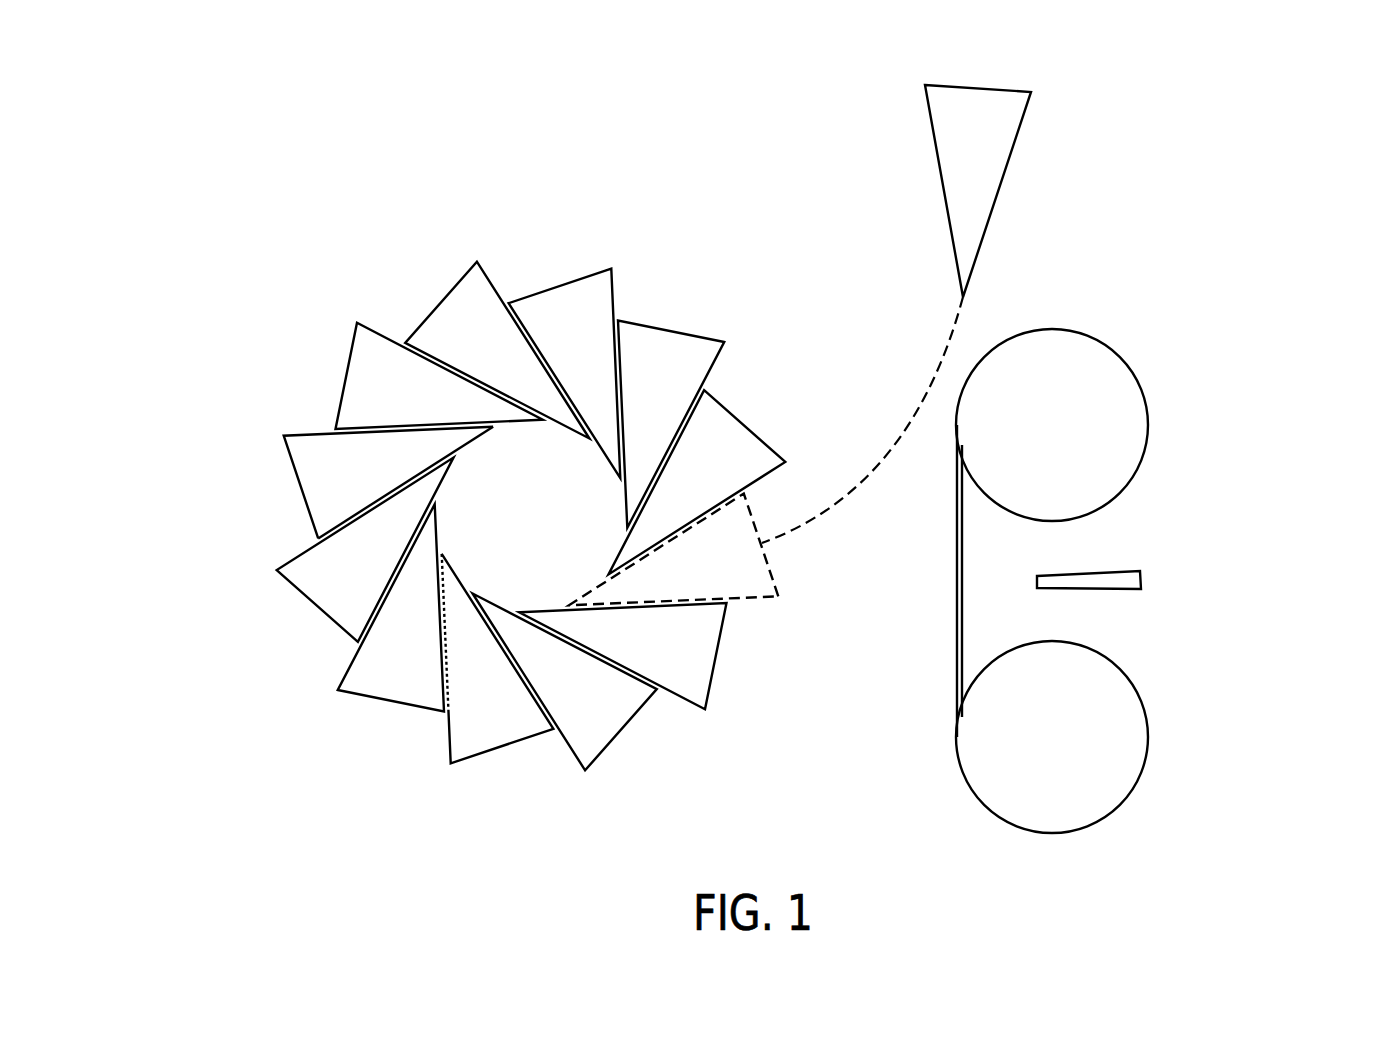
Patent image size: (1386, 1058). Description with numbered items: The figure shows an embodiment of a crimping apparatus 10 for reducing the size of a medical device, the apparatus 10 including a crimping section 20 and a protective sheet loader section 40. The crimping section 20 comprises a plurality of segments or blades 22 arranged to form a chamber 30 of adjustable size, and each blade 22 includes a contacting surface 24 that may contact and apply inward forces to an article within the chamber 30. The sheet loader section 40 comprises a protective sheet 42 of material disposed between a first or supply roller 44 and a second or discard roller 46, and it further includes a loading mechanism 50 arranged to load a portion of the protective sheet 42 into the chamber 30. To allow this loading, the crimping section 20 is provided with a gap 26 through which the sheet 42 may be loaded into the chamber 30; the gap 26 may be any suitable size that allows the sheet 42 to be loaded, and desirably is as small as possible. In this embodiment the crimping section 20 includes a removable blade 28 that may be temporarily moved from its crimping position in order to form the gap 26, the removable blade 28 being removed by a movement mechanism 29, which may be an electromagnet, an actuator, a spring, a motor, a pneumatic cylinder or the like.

The crimping apparatus 10 is at (818, 150).
The crimping section 20 is at (266, 321).
The blade 22 is at (310, 487).
The contacting surface 24 is at (472, 443).
The gap 26 is at (592, 586).
The removable blade 28 is at (1000, 98).
The movement mechanism 29 is at (942, 365).
The chamber 30 is at (438, 505).
The protective sheet loader section 40 is at (1257, 679).
The protective sheet 42 is at (956, 676).
The supply roller 44 is at (1130, 790).
The discard roller 46 is at (1112, 345).
The loading mechanism 50 is at (1142, 583).